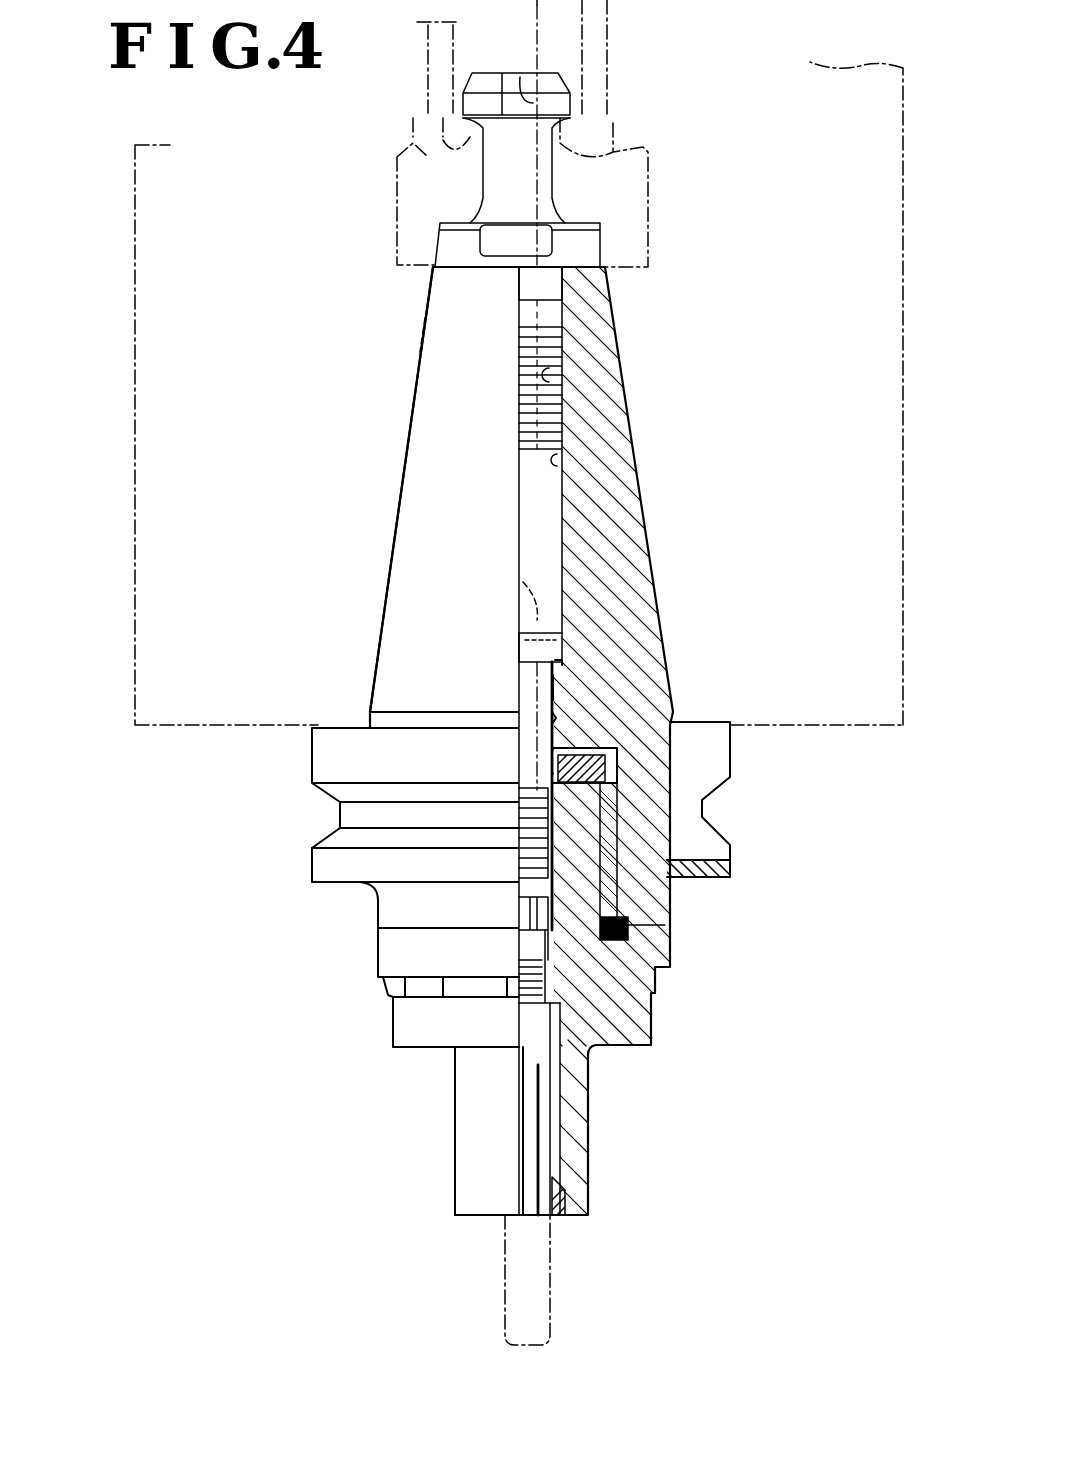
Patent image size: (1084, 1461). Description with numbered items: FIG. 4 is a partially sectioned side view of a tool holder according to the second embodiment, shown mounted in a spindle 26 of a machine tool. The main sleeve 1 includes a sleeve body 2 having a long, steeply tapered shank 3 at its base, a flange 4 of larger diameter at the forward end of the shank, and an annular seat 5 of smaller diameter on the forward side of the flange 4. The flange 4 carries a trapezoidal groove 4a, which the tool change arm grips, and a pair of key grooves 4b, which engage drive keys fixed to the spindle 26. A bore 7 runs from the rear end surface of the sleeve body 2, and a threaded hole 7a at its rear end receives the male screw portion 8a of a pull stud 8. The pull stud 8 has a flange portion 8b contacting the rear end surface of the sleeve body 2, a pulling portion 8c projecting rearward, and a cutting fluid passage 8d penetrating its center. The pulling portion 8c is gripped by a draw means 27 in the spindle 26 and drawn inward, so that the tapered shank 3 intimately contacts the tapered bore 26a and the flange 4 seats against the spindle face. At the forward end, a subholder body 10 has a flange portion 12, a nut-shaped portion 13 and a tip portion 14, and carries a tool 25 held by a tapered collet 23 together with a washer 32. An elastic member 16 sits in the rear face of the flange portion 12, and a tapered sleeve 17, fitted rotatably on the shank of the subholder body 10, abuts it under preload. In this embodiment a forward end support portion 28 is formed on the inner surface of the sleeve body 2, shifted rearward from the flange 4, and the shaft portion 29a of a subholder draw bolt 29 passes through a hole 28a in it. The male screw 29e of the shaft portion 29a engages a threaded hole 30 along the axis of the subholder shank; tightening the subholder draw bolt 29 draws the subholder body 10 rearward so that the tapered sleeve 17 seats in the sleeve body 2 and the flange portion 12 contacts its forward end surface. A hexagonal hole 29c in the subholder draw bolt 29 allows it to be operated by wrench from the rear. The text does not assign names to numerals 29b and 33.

The main sleeve 1 is at (525, 805).
The sleeve body 2 is at (433, 475).
The tapered shank 3 is at (392, 527).
The flange 4 is at (312, 757).
The trapezoidal groove 4a is at (340, 815).
The key grooves 4b is at (710, 755).
The annular seat 5 is at (312, 865).
The bore 7 is at (560, 468).
The threaded hole 7a is at (550, 383).
The pull stud 8 is at (592, 161).
The male screw portion 8a is at (562, 323).
The flange portion 8b is at (590, 240).
The pulling portion 8c is at (565, 100).
The cutting fluid passage 8d is at (520, 62).
The subholder body 10 is at (417, 1028).
The flange portion 12 is at (376, 958).
The nut-shaped portion 13 is at (387, 997).
The tip portion 14 is at (482, 1155).
The elastic member 16 is at (640, 958).
The tapered sleeve 17 is at (635, 890).
The tapered collet 23 is at (563, 1190).
The tool 25 is at (545, 1270).
The spindle 26 is at (197, 125).
The tapered bore 26a is at (423, 340).
The draw means 27 is at (425, 65).
The forward end support portion 28 is at (560, 683).
The hole 28a is at (553, 717).
The subholder draw bolt 29 is at (591, 733).
The shaft portion 29a is at (525, 695).
The collar of rod 29b is at (523, 647).
The hexagonal hole 29c is at (523, 582).
The male screw 29e is at (533, 790).
The threaded hole 30 is at (545, 847).
The washer 32 is at (562, 663).
The adjusting screw 33 is at (537, 915).